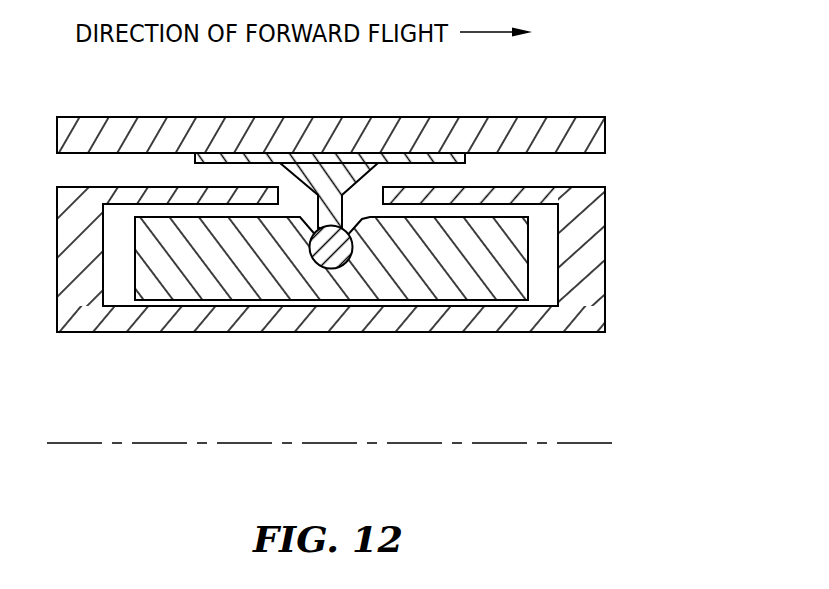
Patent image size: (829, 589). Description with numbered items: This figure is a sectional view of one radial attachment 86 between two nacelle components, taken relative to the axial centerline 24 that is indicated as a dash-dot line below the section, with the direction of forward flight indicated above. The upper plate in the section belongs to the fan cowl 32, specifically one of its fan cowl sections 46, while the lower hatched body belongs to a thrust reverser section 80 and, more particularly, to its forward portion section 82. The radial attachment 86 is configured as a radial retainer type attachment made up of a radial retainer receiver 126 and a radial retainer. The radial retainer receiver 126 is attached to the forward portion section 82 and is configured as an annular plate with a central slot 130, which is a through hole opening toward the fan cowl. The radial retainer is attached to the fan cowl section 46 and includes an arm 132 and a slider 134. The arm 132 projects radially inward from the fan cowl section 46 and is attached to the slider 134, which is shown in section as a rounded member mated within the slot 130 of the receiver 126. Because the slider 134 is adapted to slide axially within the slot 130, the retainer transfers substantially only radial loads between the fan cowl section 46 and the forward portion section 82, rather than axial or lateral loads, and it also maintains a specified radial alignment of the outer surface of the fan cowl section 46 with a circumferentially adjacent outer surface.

The axial centerline 24 is at (595, 443).
The fan cowl 32 is at (348, 87).
The fan cowl section 46 is at (578, 112).
The thrust reverser section 80 is at (363, 284).
The forward portion section 82 is at (363, 284).
The radial retainer receiver 126 is at (487, 336).
The radial attachment 86 is at (597, 174).
The central slot 130 is at (423, 178).
The arm 132 is at (355, 258).
The slider 134 is at (278, 303).